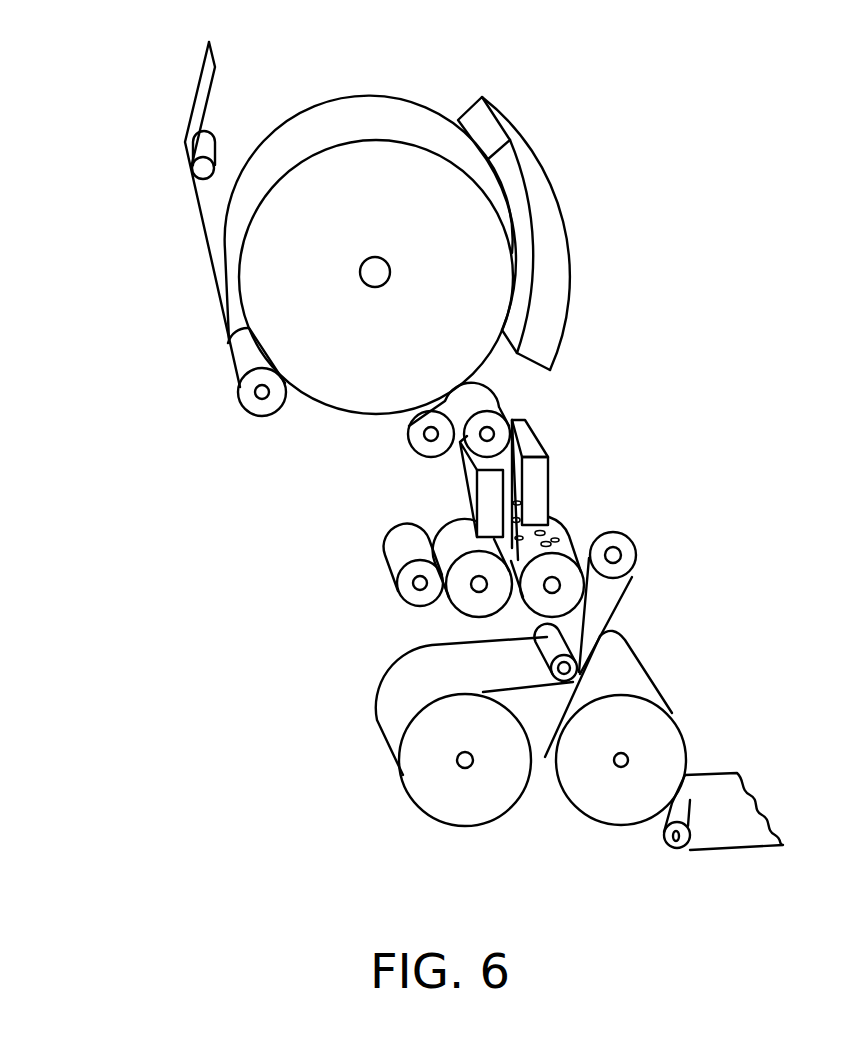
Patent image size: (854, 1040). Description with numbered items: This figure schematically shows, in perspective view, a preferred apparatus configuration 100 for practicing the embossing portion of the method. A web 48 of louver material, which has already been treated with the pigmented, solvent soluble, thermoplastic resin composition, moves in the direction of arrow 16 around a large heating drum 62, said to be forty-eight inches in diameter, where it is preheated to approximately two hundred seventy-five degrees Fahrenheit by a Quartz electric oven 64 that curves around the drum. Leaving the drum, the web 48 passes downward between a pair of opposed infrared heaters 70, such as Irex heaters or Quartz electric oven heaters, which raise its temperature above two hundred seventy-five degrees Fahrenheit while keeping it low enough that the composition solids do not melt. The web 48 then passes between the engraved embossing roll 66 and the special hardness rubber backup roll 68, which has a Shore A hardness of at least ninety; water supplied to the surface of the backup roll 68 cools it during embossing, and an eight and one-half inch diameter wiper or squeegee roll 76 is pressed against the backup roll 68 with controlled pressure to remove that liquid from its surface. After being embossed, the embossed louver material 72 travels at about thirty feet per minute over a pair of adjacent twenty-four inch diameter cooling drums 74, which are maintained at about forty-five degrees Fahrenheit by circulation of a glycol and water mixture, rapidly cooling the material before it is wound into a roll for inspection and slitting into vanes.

The apparatus configuration for embossing portion of the method 100 is at (136, 311).
The drum 62 is at (424, 167).
The Quartz electric oven 64 is at (558, 203).
The arrow 16 is at (182, 115).
The web of louver material 48 is at (200, 77).
The infrared heaters 70 is at (465, 486).
The wiper roll 76 is at (398, 560).
The backup roll 68 is at (448, 604).
The embossing roll 66 is at (528, 612).
The embossed louver material 72 is at (614, 605).
The cooling drums 74 is at (443, 803).